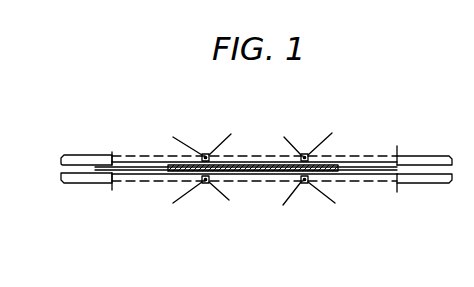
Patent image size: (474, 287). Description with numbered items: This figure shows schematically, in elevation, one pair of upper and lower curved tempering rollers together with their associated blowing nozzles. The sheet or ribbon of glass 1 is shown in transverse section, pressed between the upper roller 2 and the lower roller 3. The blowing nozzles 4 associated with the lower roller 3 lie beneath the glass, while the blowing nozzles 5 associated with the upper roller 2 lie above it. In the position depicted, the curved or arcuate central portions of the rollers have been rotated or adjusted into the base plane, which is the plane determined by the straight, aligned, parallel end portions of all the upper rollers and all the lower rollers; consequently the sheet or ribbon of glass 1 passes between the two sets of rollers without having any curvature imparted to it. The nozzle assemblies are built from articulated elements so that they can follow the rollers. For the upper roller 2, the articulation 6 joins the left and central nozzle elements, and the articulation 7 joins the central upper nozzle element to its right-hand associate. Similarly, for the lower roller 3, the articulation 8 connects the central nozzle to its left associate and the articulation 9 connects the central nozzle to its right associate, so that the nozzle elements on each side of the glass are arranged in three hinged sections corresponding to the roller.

The sheet or ribbon of glass 1 is at (337, 165).
The upper roller 2 is at (432, 156).
The lower roller 3 is at (432, 183).
The blowing nozzles associated with the lower roller 4 is at (112, 184).
The blowing nozzles associated with the upper roller 5 is at (113, 152).
The articulation between the left and central nozzle elements of the upper roller 6 is at (205, 153).
The articulation between the central upper nozzle element and its right hand associa 7 is at (305, 153).
The articulation between the central lower nozzle and its left associate 8 is at (205, 184).
The articulation between the central lower nozzle and its right associate 9 is at (305, 184).